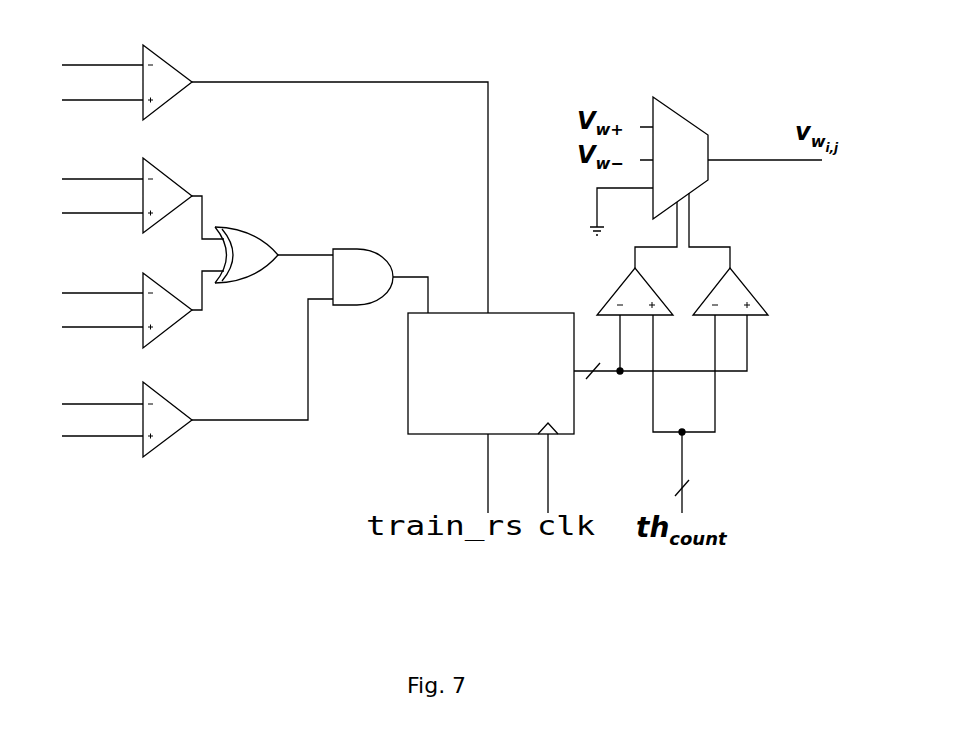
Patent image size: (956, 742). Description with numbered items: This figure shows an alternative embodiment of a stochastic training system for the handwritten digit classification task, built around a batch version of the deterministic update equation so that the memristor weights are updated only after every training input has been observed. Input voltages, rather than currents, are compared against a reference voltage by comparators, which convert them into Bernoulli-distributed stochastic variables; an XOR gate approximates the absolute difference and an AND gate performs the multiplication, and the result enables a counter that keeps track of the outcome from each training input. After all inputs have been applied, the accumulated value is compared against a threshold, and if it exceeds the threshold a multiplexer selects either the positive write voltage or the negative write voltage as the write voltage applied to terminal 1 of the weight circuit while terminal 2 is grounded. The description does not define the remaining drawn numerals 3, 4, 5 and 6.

The terminal 1 is at (107, 250).
The terminal 2 is at (246, 255).
The AND gate 3 is at (363, 277).
The up/down counter 4 is at (491, 373).
The multiplexer 5 is at (649, 166).
The threshold comparators 6 is at (682, 291).